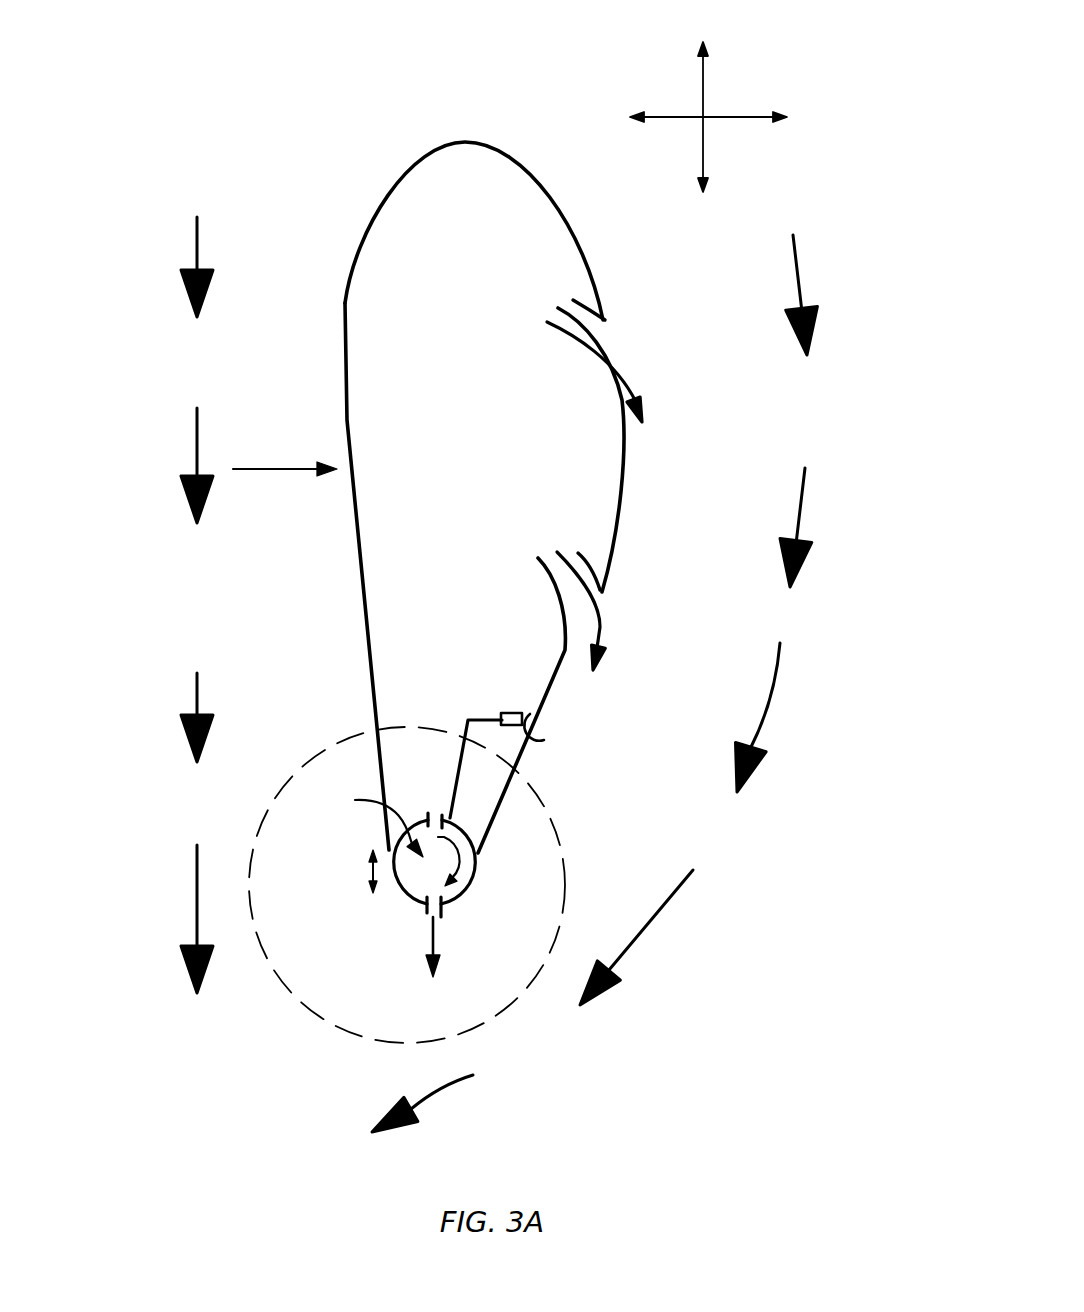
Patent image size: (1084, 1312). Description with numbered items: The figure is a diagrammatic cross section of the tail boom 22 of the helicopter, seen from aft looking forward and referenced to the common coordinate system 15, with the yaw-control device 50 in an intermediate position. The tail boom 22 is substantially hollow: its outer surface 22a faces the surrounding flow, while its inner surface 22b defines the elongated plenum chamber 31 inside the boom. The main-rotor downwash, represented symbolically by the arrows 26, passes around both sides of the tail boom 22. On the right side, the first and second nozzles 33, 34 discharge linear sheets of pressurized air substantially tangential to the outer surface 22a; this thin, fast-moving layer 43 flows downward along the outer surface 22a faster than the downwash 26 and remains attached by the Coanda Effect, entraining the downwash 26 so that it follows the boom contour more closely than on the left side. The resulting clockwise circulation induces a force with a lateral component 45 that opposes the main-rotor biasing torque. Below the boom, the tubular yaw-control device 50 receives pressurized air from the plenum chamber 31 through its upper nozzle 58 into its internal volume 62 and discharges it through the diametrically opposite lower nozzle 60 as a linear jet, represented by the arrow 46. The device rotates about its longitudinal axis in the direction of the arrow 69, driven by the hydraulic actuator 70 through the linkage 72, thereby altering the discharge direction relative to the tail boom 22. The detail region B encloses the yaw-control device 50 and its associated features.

The coordinate system 15 is at (703, 117).
The tail boom 22 is at (335, 222).
The outer surface 22a is at (345, 310).
The inner surface 22b is at (347, 355).
The downwash 26 is at (197, 238).
The plenum chamber 31 is at (466, 488).
The first nozzle 33 is at (628, 322).
The second nozzle 34 is at (625, 599).
The layer of nozzle-discharge air 43 is at (633, 367).
The lateral force component 45 is at (235, 470).
The lower nozzle discharge 46 is at (430, 934).
The yaw-control device 50 is at (380, 910).
The upper nozzle 58 is at (432, 814).
The lower nozzle 60 is at (441, 915).
The internal volume 62 is at (370, 820).
The arrow indicating direction of movement 69 is at (370, 874).
The hydraulic actuator 70 is at (510, 712).
The linkage 72 is at (470, 717).
The detail region B is at (272, 962).